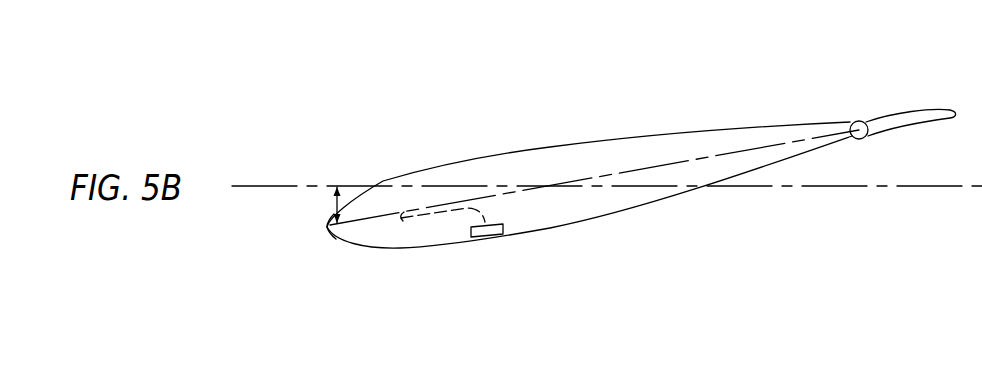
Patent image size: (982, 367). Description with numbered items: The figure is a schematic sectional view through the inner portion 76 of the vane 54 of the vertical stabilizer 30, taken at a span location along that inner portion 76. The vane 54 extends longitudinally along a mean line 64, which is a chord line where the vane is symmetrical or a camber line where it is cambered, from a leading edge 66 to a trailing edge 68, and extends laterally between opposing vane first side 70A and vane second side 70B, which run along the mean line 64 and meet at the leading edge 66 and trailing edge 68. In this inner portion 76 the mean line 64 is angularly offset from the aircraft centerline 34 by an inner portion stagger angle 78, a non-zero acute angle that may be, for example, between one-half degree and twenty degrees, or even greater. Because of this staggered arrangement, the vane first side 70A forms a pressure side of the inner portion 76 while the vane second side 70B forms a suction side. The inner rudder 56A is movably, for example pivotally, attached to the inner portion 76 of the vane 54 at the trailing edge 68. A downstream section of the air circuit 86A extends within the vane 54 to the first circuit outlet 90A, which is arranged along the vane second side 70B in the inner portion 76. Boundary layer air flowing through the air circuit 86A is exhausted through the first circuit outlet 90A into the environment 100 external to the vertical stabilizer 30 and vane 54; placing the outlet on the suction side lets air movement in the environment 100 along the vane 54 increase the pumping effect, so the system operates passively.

The vertical stabilizer 30 is at (847, 78).
The centerline 34 is at (247, 188).
The vane 54 is at (588, 137).
The inner portion 76 is at (527, 131).
The inner rudder 56A is at (930, 95).
The mean line 64 is at (740, 152).
The leading edge 66 is at (328, 229).
The trailing edge 68 is at (868, 136).
The vane first side 70A is at (582, 143).
The vane second side 70B is at (557, 231).
The inner portion stagger angle 78 is at (333, 208).
The air circuit 86A is at (443, 213).
The first circuit outlet 90A is at (488, 239).
The environment 100 is at (277, 319).